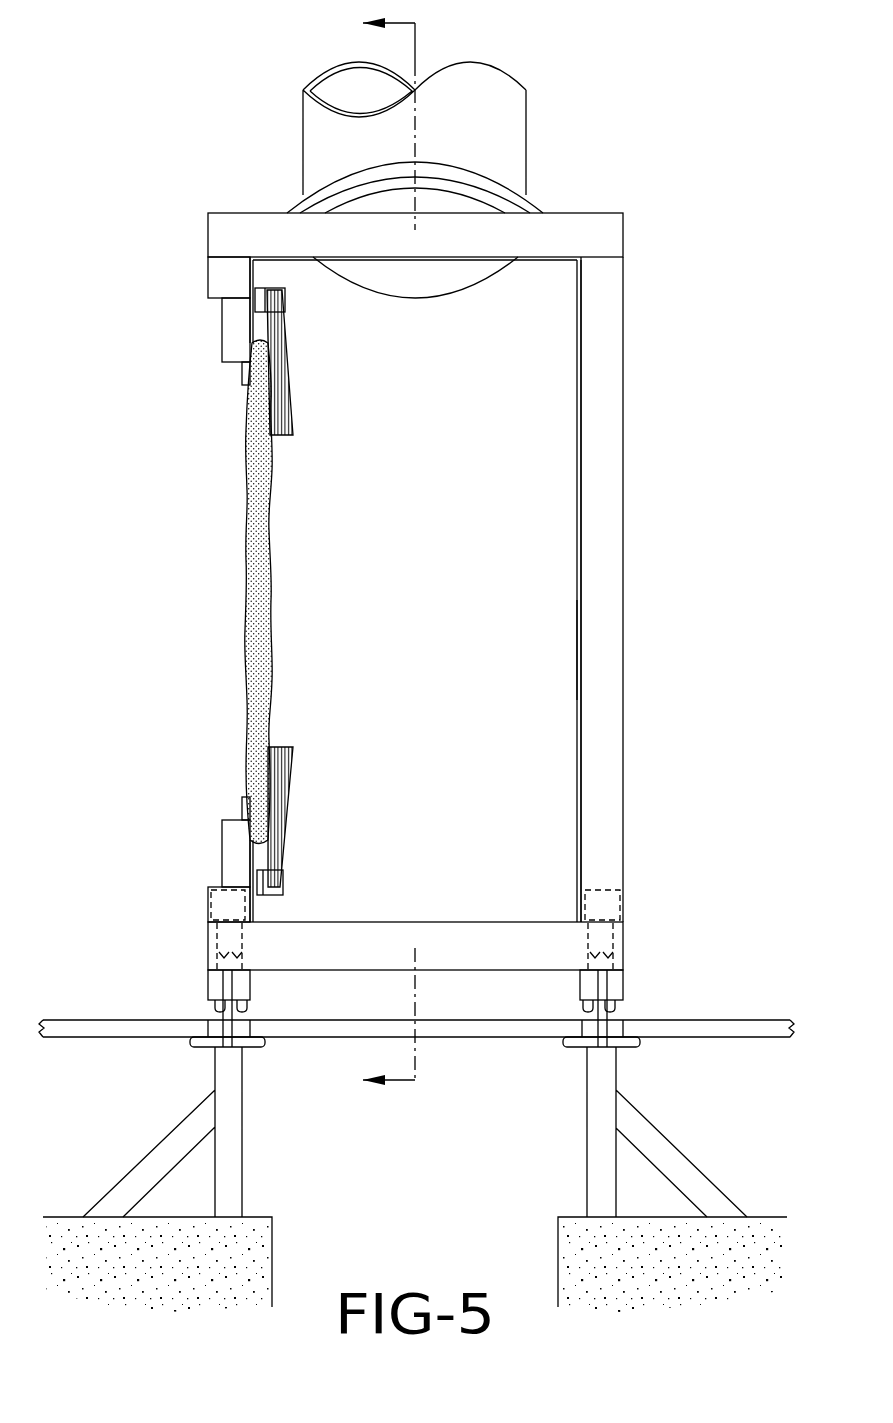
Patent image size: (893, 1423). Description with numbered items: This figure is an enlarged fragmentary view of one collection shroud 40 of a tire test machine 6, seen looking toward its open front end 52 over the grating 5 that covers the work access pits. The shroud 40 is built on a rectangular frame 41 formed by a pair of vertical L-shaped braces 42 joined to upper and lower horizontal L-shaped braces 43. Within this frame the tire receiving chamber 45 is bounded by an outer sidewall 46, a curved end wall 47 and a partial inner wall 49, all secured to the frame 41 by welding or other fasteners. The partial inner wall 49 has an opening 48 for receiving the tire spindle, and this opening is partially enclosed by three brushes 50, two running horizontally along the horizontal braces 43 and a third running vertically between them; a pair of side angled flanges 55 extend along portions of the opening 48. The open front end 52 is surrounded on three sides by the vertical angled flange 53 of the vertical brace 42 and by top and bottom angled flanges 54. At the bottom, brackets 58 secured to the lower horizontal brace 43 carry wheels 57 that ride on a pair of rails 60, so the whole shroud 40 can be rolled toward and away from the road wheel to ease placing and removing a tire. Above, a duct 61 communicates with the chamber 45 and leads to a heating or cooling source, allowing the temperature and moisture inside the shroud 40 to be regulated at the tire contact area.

The grating 5 is at (745, 1020).
The tire test machine 6 is at (377, 553).
The collection shroud 40 is at (648, 411).
The frame 41 is at (630, 287).
The vertical L-shaped brace 42 is at (228, 318).
The horizontal L-shaped brace 43 is at (242, 377).
The tire receiving chamber 45 is at (540, 740).
The outer sidewall 46 is at (577, 490).
The curved end wall 47 is at (530, 635).
The opening 48 is at (284, 594).
The partial inner wall 49 is at (250, 335).
The brush 50 is at (286, 424).
The open front end 52 is at (578, 824).
The vertical angled flange 53 is at (605, 348).
The top and bottom angled flanges 54 is at (583, 225).
The side angled flange 55 is at (220, 280).
The wheel 57 is at (222, 987).
The bracket 58 is at (248, 980).
The rail 60 is at (228, 1006).
The duct 61 is at (507, 120).